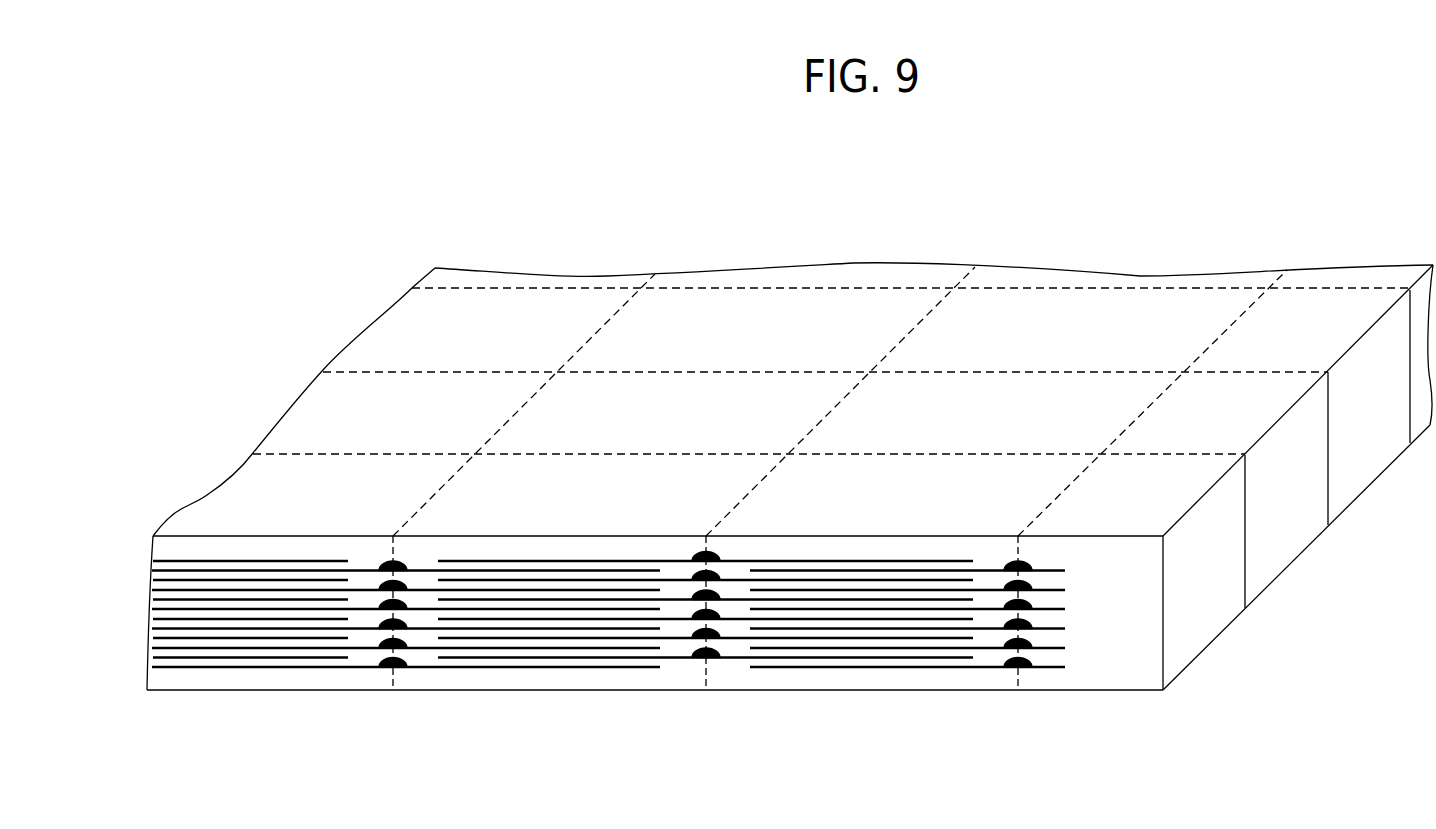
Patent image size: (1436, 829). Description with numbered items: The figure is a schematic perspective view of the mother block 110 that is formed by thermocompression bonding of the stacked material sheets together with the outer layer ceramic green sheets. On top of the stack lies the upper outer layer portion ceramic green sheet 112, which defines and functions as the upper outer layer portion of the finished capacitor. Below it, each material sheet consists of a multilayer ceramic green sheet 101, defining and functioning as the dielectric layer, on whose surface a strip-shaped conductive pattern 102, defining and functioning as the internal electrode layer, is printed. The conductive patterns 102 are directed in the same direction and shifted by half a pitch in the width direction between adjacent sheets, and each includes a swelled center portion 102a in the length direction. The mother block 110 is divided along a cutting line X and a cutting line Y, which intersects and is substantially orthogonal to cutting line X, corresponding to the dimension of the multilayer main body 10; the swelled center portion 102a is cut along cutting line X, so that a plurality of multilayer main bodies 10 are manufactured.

The mother block 110 is at (988, 193).
The multilayer main body 10 is at (695, 405).
The upper outer layer portion ceramic green sheet 112 is at (168, 545).
The multilayer ceramic green sheet 101 is at (888, 633).
The conductive pattern 102 is at (948, 560).
The swelled center portion 102a is at (700, 658).
The cutting line X is at (1225, 327).
The cutting line Y is at (1063, 372).